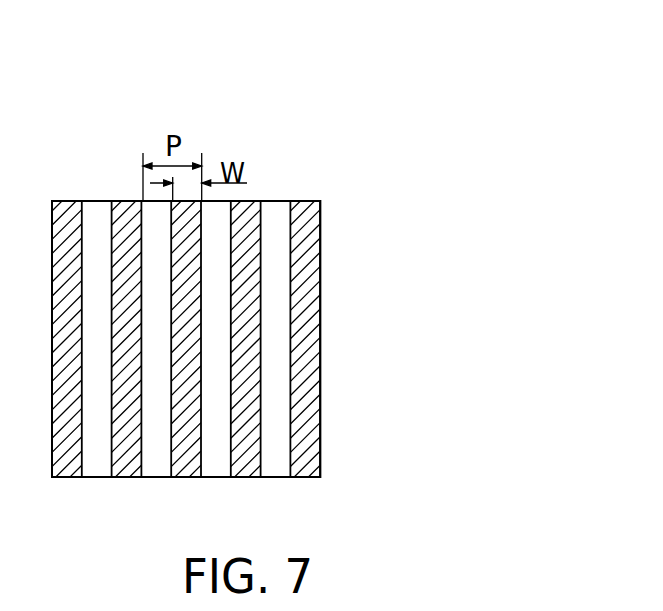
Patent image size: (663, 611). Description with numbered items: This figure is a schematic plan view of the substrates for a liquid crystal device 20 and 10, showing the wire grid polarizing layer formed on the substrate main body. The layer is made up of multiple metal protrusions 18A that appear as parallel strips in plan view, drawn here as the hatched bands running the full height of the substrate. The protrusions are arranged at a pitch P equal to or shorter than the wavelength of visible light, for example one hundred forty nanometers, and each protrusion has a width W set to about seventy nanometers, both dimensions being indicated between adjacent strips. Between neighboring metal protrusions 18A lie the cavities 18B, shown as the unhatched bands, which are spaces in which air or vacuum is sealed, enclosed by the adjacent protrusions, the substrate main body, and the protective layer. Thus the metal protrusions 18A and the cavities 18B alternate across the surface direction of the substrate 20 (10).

The substrate for a liquid crystal device 20 is at (305, 100).
The substrate for a liquid crystal device 10 is at (186, 339).
The metal protrusions 18A is at (68, 200).
The cavities 18B is at (95, 468).